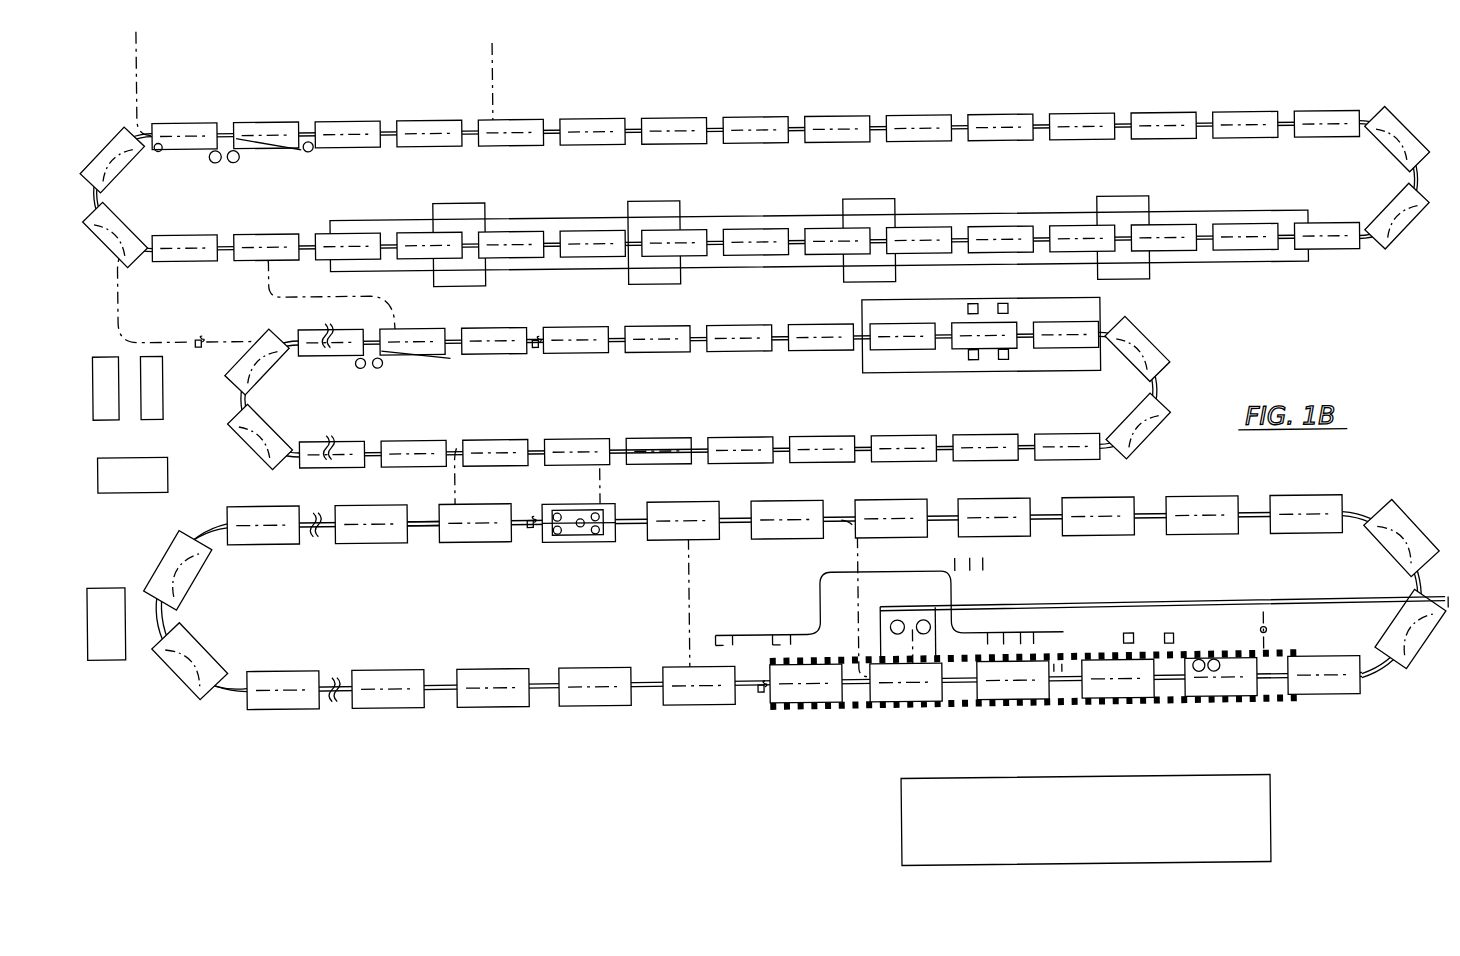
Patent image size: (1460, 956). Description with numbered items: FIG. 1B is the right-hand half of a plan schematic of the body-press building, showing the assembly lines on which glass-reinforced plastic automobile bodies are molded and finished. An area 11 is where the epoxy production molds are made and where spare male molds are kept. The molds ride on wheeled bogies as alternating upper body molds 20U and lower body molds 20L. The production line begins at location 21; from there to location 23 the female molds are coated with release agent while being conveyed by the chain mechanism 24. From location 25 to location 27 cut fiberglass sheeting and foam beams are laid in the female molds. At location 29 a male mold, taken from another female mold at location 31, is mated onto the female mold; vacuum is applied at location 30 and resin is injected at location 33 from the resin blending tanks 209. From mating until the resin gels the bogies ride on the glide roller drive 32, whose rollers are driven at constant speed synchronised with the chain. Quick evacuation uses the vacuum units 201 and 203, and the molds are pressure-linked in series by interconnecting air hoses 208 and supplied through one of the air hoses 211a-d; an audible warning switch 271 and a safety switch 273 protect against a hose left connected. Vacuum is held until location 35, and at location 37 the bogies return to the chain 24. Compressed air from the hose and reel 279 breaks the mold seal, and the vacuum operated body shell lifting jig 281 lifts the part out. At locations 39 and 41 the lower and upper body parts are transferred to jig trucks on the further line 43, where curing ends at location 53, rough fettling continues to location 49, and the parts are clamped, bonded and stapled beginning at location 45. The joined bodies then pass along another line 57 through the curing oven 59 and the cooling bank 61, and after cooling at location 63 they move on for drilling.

The mold area 11 is at (1170, 784).
The lower body mold 20L is at (204, 644).
The upper body mold 20U is at (294, 673).
The beginning location of production line 21 is at (366, 546).
The release treatment end location 23 is at (185, 686).
The chain mechanism 24 is at (423, 529).
The fiberglass lay-up start location 25 is at (298, 713).
The fiberglass lay-up end location 27 is at (598, 713).
The mold mating location 29 is at (693, 711).
The vacuum application location 30 is at (808, 700).
The male mold removal location 31 is at (792, 545).
The glide roller drive 32 is at (1050, 732).
The resin injection location 33 is at (915, 697).
The vacuum removal location 35 is at (1207, 540).
The roller drive exit location 37 is at (1313, 668).
The lower body pick-up location 39 is at (600, 530).
The upper body pick-up location 41 is at (482, 545).
The further line 43 is at (728, 370).
The mating and stapling location 45 is at (417, 334).
The rough fettling end location 49 is at (949, 332).
The curing end location 53 is at (992, 462).
The another line 57 is at (590, 185).
The curing oven 59 is at (630, 200).
The cooling bank 61 is at (629, 111).
The cooling end location 63 is at (433, 143).
The vacuum unit 201 is at (736, 642).
The vacuum unit 203 is at (791, 642).
The interconnecting air hose 208 is at (1058, 670).
The resin blending tank 209 is at (922, 627).
The air hoses 211a-d is at (999, 635).
The audible warning switch 271 is at (1122, 647).
The safety switch 273 is at (1171, 646).
The compressed air hose and reel 279 is at (982, 569).
The vacuum operated body shell lifting jig 281 is at (595, 518).